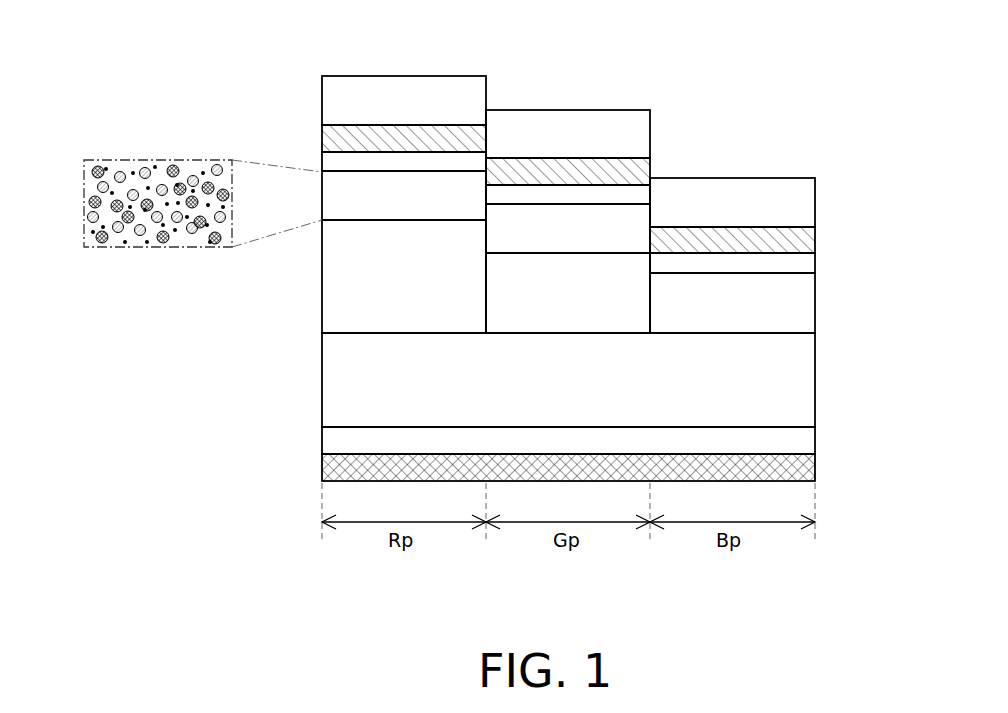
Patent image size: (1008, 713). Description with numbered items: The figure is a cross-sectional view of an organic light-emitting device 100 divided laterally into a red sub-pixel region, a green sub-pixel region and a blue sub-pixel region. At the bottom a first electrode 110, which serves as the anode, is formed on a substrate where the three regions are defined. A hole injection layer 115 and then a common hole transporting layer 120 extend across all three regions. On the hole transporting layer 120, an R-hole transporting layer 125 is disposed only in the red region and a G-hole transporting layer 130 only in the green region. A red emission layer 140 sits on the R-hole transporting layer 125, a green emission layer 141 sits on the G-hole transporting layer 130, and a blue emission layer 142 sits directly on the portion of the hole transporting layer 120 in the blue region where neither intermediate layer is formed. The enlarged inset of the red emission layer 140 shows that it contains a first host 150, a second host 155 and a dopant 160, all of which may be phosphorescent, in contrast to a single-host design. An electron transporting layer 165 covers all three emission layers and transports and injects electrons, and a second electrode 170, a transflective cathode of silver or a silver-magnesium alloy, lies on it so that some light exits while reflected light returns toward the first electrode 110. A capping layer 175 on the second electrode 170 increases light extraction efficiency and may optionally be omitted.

The organic light-emitting device 100 is at (294, 20).
The first electrode 110 is at (331, 464).
The hole injection layer 115 is at (331, 438).
The hole transporting layer 120 is at (331, 386).
The R-hole transporting layer 125 is at (331, 310).
The G-hole transporting layer 130 is at (517, 287).
The red emission layer 140 is at (334, 178).
The green emission layer 141 is at (503, 242).
The blue emission layer 142 is at (792, 308).
The first host 150 is at (98, 170).
The second host 155 is at (146, 168).
The dopant 160 is at (90, 188).
The electron transporting layer 165 is at (333, 162).
The second electrode 170 is at (335, 130).
The capping layer 175 is at (335, 85).